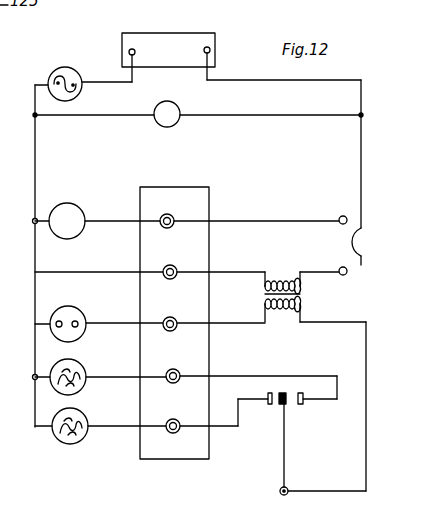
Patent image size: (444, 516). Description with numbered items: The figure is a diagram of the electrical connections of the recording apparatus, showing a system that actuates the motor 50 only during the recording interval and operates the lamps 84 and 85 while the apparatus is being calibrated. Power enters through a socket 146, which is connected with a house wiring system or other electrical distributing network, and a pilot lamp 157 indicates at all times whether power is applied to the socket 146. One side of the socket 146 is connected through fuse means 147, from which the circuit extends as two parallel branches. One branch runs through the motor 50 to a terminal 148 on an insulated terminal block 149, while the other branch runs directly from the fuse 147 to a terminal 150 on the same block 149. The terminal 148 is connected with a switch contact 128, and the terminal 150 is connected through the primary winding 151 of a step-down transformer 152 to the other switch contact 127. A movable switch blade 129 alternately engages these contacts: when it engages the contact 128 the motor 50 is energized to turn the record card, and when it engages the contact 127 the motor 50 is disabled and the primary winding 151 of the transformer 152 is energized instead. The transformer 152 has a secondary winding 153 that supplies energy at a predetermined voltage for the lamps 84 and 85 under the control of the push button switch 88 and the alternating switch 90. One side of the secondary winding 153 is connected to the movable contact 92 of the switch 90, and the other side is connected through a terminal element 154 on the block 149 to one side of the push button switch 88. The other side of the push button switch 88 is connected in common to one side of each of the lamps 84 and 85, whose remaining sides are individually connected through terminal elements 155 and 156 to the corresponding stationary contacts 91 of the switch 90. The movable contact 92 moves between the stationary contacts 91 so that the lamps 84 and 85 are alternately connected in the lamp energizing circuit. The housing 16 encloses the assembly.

The socket 146 is at (170, 33).
The fuse means 147 is at (66, 67).
The pilot lamp 157 is at (163, 127).
The motor 50 is at (77, 208).
The insulated terminal block 149 is at (209, 197).
The terminal 148 is at (167, 214).
The switch contact 128 is at (348, 217).
The movable switch blade 129 is at (362, 241).
The switch contact 127 is at (346, 275).
The terminal 150 is at (171, 265).
The primary winding 151 is at (284, 281).
The step-down transformer 152 is at (302, 296).
The secondary winding 153 is at (283, 312).
The terminal element 154 is at (171, 317).
The terminal element 155 is at (173, 368).
The terminal element 156 is at (173, 418).
The push button control switch means 88 is at (80, 310).
The lamp 84 is at (80, 364).
The lamp 85 is at (72, 445).
The housing 16 is at (14, 327).
The stationary contacts 91 is at (270, 392).
The movable contact 92 is at (283, 430).
The alternating switch means 90 is at (298, 412).